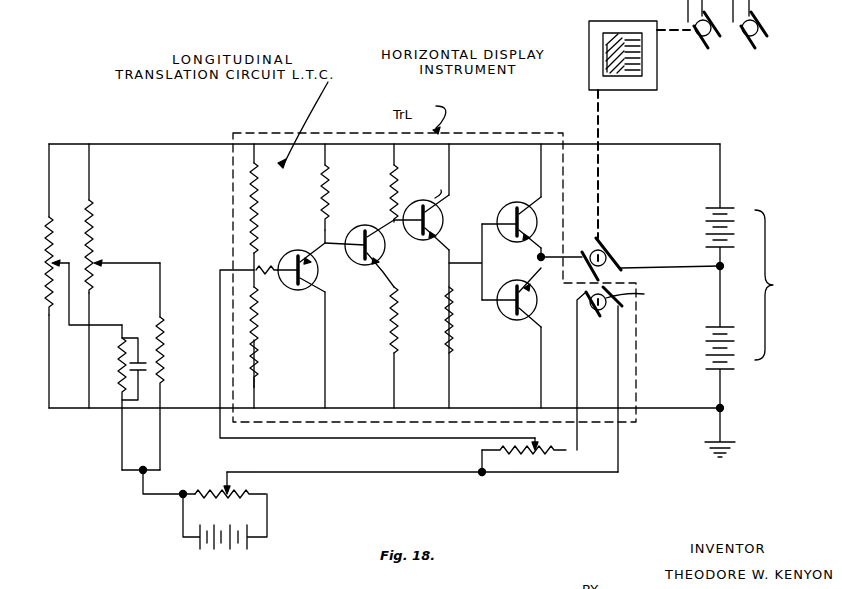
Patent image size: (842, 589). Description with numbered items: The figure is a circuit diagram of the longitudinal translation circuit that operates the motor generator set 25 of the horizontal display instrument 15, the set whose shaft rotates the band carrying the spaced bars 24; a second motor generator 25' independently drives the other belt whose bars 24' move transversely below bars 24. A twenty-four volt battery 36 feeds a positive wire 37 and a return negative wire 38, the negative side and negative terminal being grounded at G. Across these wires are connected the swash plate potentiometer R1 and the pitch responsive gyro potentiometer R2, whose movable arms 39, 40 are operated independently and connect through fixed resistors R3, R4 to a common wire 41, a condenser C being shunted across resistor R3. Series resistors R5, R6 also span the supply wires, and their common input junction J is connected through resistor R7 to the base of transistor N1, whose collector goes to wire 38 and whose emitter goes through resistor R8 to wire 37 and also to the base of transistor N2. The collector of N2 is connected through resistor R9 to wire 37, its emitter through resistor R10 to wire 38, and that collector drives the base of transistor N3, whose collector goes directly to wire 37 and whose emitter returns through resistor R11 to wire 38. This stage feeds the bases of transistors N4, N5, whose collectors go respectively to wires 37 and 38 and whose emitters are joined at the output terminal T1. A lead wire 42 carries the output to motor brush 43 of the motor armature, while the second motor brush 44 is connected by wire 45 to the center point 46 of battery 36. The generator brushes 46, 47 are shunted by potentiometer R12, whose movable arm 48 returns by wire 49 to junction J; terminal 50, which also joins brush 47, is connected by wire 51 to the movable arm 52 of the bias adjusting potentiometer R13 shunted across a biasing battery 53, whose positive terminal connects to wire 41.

The instrument 15 is at (586, 71).
The spaced bars 24 is at (622, 73).
The spaced bars 24' is at (646, 56).
The motor generator 25 is at (605, 338).
The motor generator 25' is at (727, 39).
The battery 36 is at (751, 276).
The positive wire 37 is at (172, 150).
The return negative wire 38 is at (370, 408).
The movable arm 39 is at (56, 263).
The movable arm 40 is at (100, 263).
The common wire 41 is at (137, 483).
The lead wire 42 is at (558, 262).
The motor brush 43 is at (580, 253).
The second motor brush 44 is at (608, 250).
The wire 45 is at (683, 253).
The center point 46 is at (717, 268).
The generator brush 47 is at (634, 295).
The movable arm 48 is at (537, 445).
The wire 49 is at (220, 302).
The terminal 50 is at (482, 472).
The wire 51 is at (378, 478).
The movable arm 52 is at (224, 486).
The biasing battery 53 is at (240, 548).
The swash plate potentiometer R1 is at (48, 240).
The pitch responsive gyro potentiometer R2 is at (92, 215).
The fixed resistor R3 is at (120, 362).
The fixed resistor R4 is at (163, 355).
The resistor R5 is at (256, 215).
The resistor R6 is at (256, 342).
The resistor R7 is at (258, 290).
The resistor R8 is at (320, 198).
The resistor R9 is at (396, 190).
The resistor R10 is at (397, 320).
The resistor R11 is at (446, 326).
The potentiometer R12 is at (563, 454).
The bias adjusting potentiometer R13 is at (242, 490).
The n-type point contact transistor N1 is at (298, 290).
The p-type point contact transistor N2 is at (357, 222).
The p-type point contact transistor N3 is at (442, 216).
The transistor N4 is at (510, 206).
The n type point contact transistor N5 is at (520, 328).
The condenser C is at (142, 371).
The input junction J is at (268, 267).
The output terminal T1 is at (546, 256).
The ground G is at (728, 450).